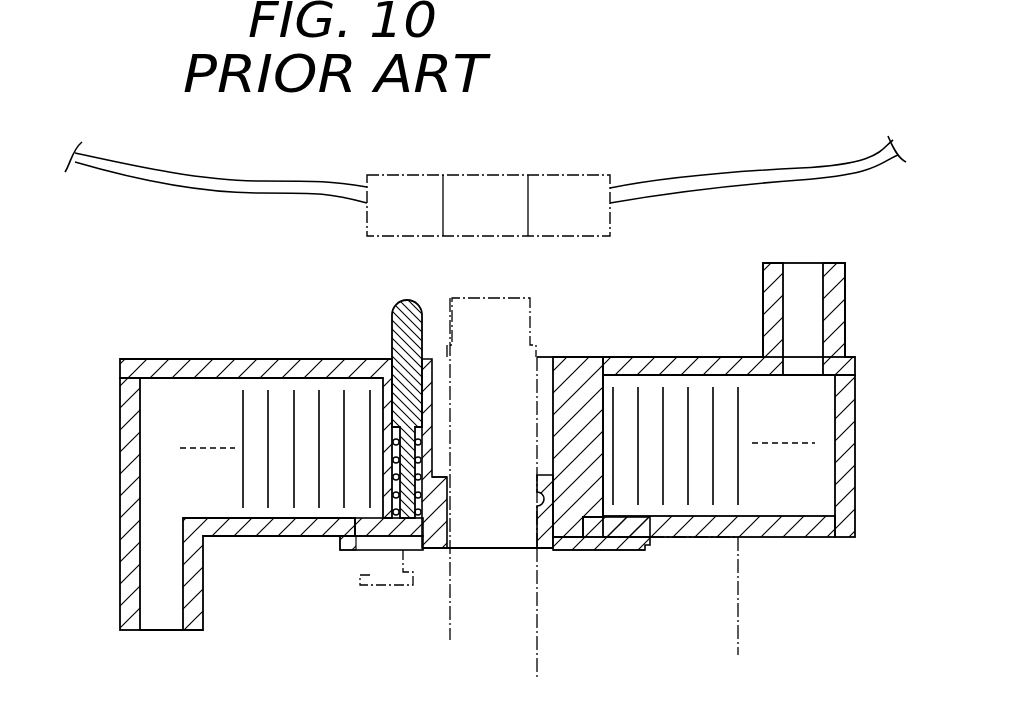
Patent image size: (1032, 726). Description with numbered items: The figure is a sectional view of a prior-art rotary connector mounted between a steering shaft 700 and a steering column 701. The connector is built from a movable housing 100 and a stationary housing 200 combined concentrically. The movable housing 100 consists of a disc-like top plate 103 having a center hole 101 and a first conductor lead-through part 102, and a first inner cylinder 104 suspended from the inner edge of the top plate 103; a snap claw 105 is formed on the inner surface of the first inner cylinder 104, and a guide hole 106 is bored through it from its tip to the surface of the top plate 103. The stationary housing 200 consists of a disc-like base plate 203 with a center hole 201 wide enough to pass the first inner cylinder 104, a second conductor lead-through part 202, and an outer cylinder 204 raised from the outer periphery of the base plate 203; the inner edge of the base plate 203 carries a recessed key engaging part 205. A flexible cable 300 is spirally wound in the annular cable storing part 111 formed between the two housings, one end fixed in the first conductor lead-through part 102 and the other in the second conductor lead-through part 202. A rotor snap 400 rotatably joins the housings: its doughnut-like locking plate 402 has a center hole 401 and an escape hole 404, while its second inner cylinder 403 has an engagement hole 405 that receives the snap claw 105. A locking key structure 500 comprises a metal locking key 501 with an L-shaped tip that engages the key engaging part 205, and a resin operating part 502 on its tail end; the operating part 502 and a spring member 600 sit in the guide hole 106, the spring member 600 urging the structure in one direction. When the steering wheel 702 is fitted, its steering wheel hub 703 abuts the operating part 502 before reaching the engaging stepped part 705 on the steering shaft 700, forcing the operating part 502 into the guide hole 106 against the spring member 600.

The movable housing 100 is at (718, 347).
The center hole 101 is at (547, 360).
The first conductor lead-through part 102 is at (845, 280).
The top plate 103 is at (600, 357).
The first inner cylinder 104 is at (590, 428).
The snap claw 105 is at (600, 500).
The guide hole 106 is at (423, 348).
The annular cable storing part 111 is at (278, 387).
The stationary housing 200 is at (840, 542).
The center hole 201 is at (583, 537).
The second conductor lead-through part 202 is at (120, 598).
The base plate 203 is at (793, 538).
The outer cylinder 204 is at (855, 442).
The key engaging part 205 is at (340, 528).
The flexible cable 300 is at (745, 410).
The rotor snap 400 is at (641, 553).
The center hole 401 is at (492, 548).
The locking plate 402 is at (620, 548).
The second inner cylinder 403 is at (537, 515).
The escape hole 404 is at (360, 548).
The engagement hole 405 is at (545, 497).
The locking key structure 500 is at (385, 451).
The locking key 501 is at (372, 587).
The operating part 502 is at (402, 307).
The spring member 600 is at (435, 440).
The steering shaft 700 is at (540, 620).
The steering column 701 is at (742, 620).
The steering wheel 702 is at (803, 168).
The steering wheel hub 703 is at (557, 178).
The engaging stepped part 705 is at (543, 355).